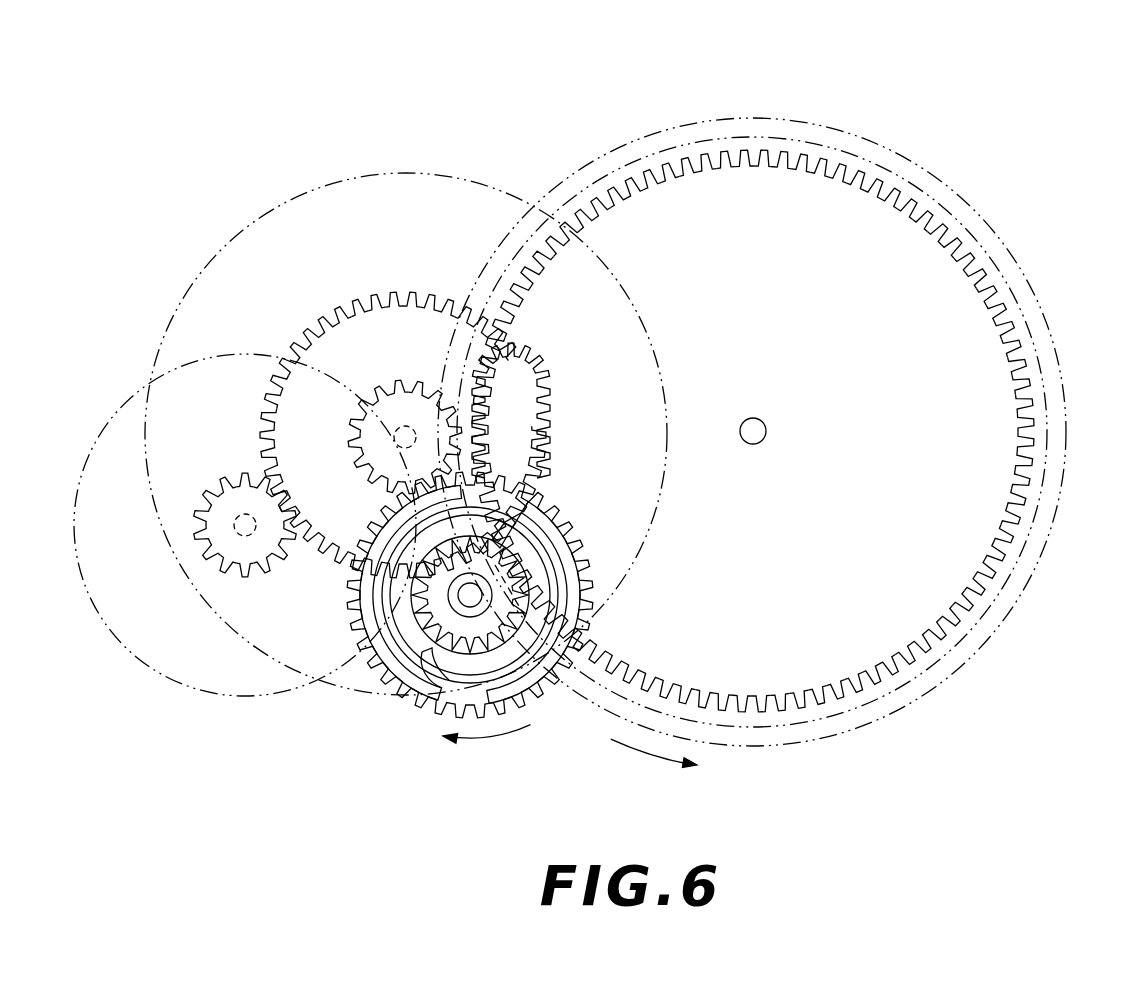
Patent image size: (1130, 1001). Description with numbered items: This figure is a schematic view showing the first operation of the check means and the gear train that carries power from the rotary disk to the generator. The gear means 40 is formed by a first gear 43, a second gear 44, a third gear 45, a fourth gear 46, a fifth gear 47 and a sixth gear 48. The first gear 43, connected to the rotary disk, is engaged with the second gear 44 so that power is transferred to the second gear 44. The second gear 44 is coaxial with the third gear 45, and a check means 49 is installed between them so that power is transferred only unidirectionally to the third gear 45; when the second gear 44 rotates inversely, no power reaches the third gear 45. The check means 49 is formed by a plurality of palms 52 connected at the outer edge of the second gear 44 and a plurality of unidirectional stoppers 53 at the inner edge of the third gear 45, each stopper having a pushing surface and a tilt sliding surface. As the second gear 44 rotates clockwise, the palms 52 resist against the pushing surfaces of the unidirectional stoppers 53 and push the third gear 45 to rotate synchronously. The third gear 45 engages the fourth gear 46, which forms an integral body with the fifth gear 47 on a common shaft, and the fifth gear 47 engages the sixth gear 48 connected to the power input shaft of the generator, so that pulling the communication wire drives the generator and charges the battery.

The gear means 40 is at (541, 172).
The first gear 43 is at (947, 549).
The second gear 44 is at (377, 672).
The third gear 45 is at (397, 690).
The fourth gear 46 is at (425, 520).
The fifth gear 47 is at (397, 295).
The sixth gear 48 is at (193, 537).
The check means 49 is at (447, 678).
The palms 52 is at (494, 684).
The unidirectional stoppers 53 is at (462, 690).